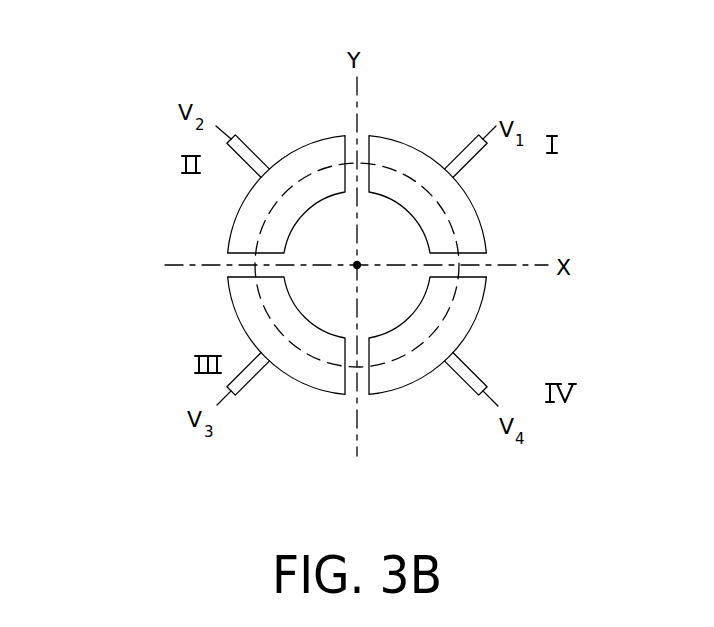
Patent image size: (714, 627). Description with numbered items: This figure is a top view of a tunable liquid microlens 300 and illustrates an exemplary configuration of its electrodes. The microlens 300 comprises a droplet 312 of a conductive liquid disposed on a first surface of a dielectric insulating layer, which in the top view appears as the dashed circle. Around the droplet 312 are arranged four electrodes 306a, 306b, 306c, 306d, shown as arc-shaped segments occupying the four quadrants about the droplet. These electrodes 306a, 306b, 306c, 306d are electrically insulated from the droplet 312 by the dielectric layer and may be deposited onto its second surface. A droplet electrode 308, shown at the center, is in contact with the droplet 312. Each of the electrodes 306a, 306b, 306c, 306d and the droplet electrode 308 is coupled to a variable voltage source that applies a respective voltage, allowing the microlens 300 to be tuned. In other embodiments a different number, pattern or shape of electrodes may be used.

The tunable liquid microlens 300 is at (113, 153).
The electrode 306a is at (410, 163).
The electrode 306b is at (304, 163).
The electrode 306c is at (298, 368).
The electrode 306d is at (468, 305).
The droplet electrode 308 is at (360, 262).
The droplet 312 is at (452, 226).